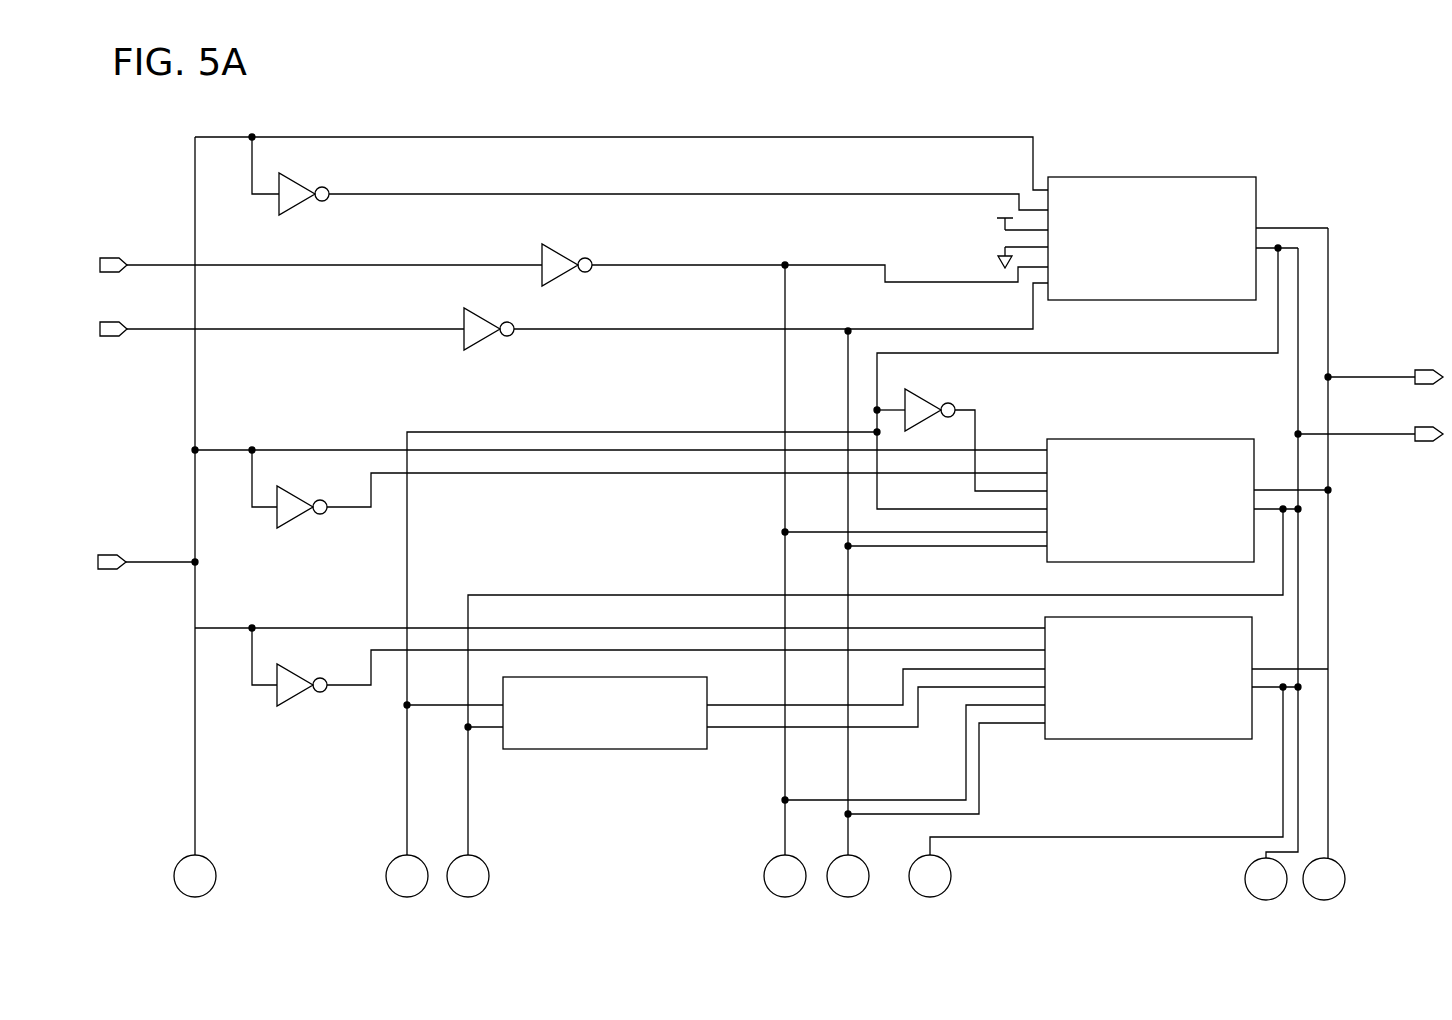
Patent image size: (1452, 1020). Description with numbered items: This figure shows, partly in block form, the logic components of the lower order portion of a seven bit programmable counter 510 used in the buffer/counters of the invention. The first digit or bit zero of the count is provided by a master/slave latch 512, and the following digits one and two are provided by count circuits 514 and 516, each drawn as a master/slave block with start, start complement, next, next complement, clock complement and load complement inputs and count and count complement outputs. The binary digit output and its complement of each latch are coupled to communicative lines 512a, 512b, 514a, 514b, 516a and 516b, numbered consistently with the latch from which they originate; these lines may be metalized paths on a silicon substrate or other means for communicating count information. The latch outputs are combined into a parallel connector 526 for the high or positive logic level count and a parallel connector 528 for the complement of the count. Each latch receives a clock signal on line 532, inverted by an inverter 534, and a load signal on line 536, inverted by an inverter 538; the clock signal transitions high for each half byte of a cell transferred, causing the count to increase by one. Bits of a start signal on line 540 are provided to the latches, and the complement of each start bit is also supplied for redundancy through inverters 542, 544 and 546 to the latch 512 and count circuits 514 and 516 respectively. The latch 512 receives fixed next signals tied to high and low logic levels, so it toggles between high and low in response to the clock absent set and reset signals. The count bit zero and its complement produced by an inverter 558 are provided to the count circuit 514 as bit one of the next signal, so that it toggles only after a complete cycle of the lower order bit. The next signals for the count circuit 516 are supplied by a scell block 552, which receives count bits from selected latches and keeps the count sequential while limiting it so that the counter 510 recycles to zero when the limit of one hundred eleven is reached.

The programmable counter 510 is at (786, 112).
The master/slave latch 512 is at (1156, 177).
The communicative line 512a is at (1272, 218).
The communicative line 512b is at (1290, 244).
The count circuit 514 is at (1148, 439).
The communicative line 514a is at (1266, 488).
The communicative line 514b is at (1276, 512).
The count circuit 516 is at (1146, 739).
The communicative line 516a is at (1266, 668).
The communicative line 516b is at (1272, 692).
The parallel connector 526 is at (1370, 377).
The parallel connector 528 is at (1370, 434).
The clock signal line 532 is at (156, 265).
The inverter 534 is at (558, 262).
The load signal line 536 is at (156, 329).
The inverter 538 is at (478, 322).
The start signal line 540 is at (154, 562).
The inverter 542 is at (294, 192).
The inverter 544 is at (292, 505).
The inverter 546 is at (292, 683).
The scell block 552 is at (602, 749).
The inverter 558 is at (920, 410).